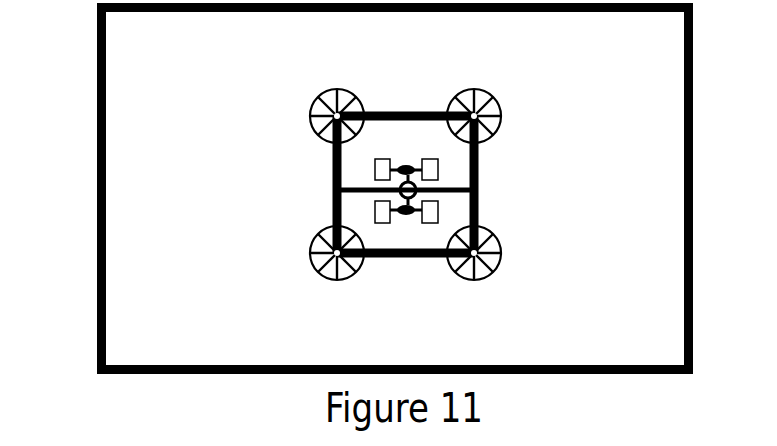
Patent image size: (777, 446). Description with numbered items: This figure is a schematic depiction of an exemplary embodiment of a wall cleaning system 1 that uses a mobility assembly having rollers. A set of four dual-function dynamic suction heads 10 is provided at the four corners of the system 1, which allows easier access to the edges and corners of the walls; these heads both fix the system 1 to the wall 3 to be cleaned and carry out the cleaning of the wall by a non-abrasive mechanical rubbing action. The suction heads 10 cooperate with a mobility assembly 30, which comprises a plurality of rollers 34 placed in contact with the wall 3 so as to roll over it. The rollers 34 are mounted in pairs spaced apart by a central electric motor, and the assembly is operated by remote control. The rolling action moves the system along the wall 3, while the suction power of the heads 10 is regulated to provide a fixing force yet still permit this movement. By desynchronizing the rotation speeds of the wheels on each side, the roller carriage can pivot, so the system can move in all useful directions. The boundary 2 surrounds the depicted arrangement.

The system 1 is at (389, 180).
The boundary of the operating environment 2 is at (92, 83).
The wall 3 is at (638, 193).
The dynamic suction head 10 is at (500, 103).
The mobility assembly 30 is at (435, 167).
The roller 34 is at (438, 215).